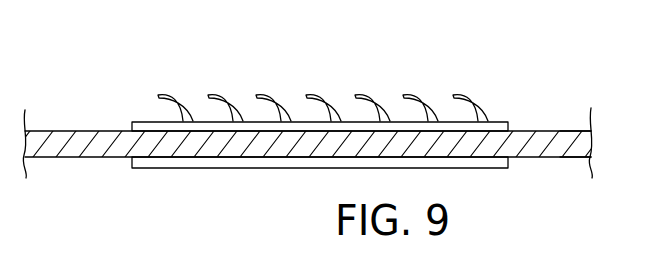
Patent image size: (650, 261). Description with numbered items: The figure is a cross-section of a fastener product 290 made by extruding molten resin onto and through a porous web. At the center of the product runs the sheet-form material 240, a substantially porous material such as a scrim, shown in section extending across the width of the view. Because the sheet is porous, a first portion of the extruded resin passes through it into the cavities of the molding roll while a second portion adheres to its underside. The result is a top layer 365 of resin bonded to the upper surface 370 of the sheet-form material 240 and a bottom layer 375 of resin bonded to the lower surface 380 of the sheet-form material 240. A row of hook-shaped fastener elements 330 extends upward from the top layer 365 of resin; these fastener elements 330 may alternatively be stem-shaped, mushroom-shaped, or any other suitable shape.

The fastener product 290 is at (526, 77).
The upper surface 370 is at (88, 130).
The lower surface 380 is at (88, 157).
The top layer 365 is at (132, 121).
The bottom layer 375 is at (132, 168).
The fastener elements 330 is at (453, 96).
The sheet-form material 240 is at (578, 145).